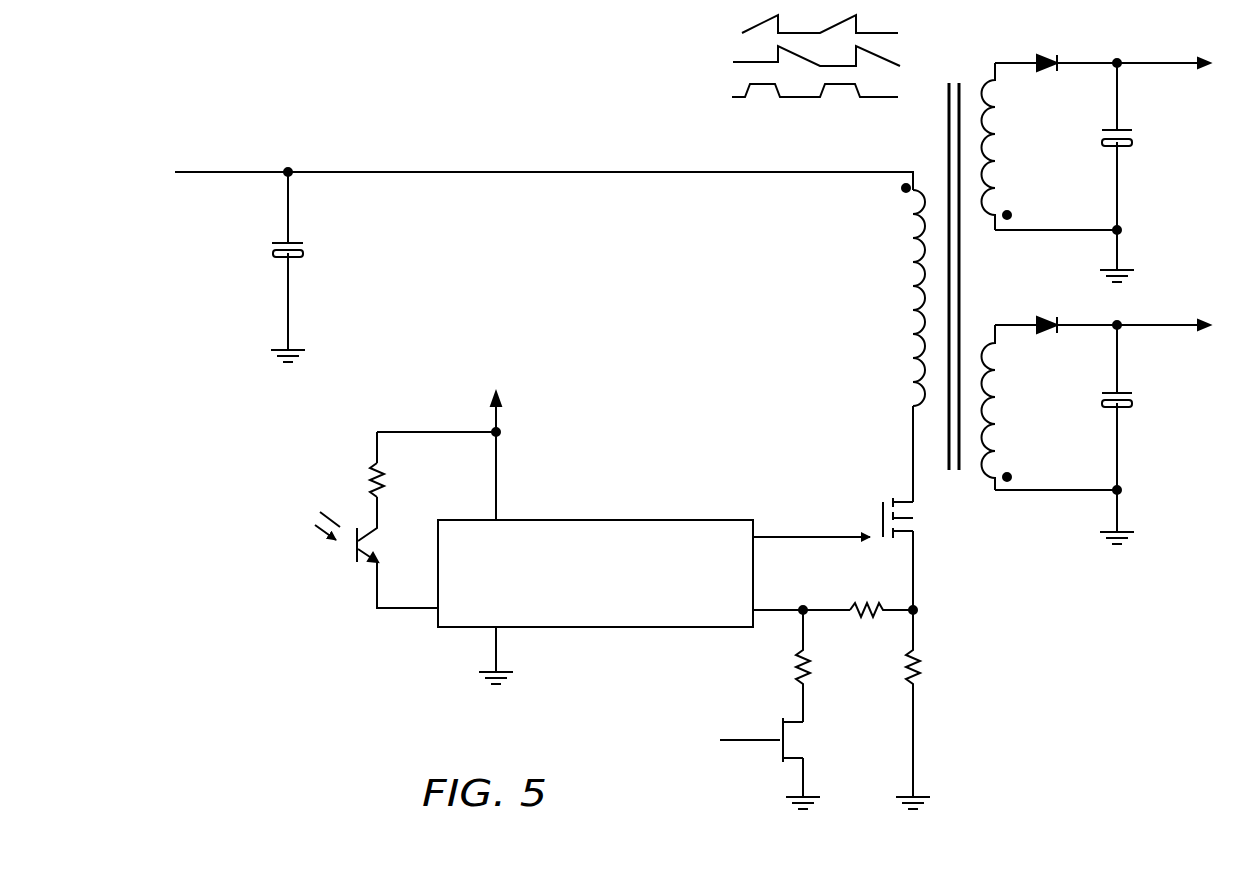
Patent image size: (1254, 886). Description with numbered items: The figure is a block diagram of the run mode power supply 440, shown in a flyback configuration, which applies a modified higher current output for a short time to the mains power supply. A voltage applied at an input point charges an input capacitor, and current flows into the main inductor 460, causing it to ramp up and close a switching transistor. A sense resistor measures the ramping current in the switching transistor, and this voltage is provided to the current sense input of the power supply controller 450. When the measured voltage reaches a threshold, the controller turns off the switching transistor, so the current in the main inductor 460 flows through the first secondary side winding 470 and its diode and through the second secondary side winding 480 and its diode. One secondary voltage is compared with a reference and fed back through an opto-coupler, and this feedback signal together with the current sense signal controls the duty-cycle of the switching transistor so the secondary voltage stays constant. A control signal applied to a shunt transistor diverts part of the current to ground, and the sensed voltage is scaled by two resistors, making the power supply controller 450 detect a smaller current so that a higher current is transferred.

The run mode power supply 440 is at (504, 103).
The power supply controller 450 is at (618, 520).
The main inductor 460 is at (913, 298).
The inductor 470 is at (1000, 143).
The inductor 480 is at (1000, 406).